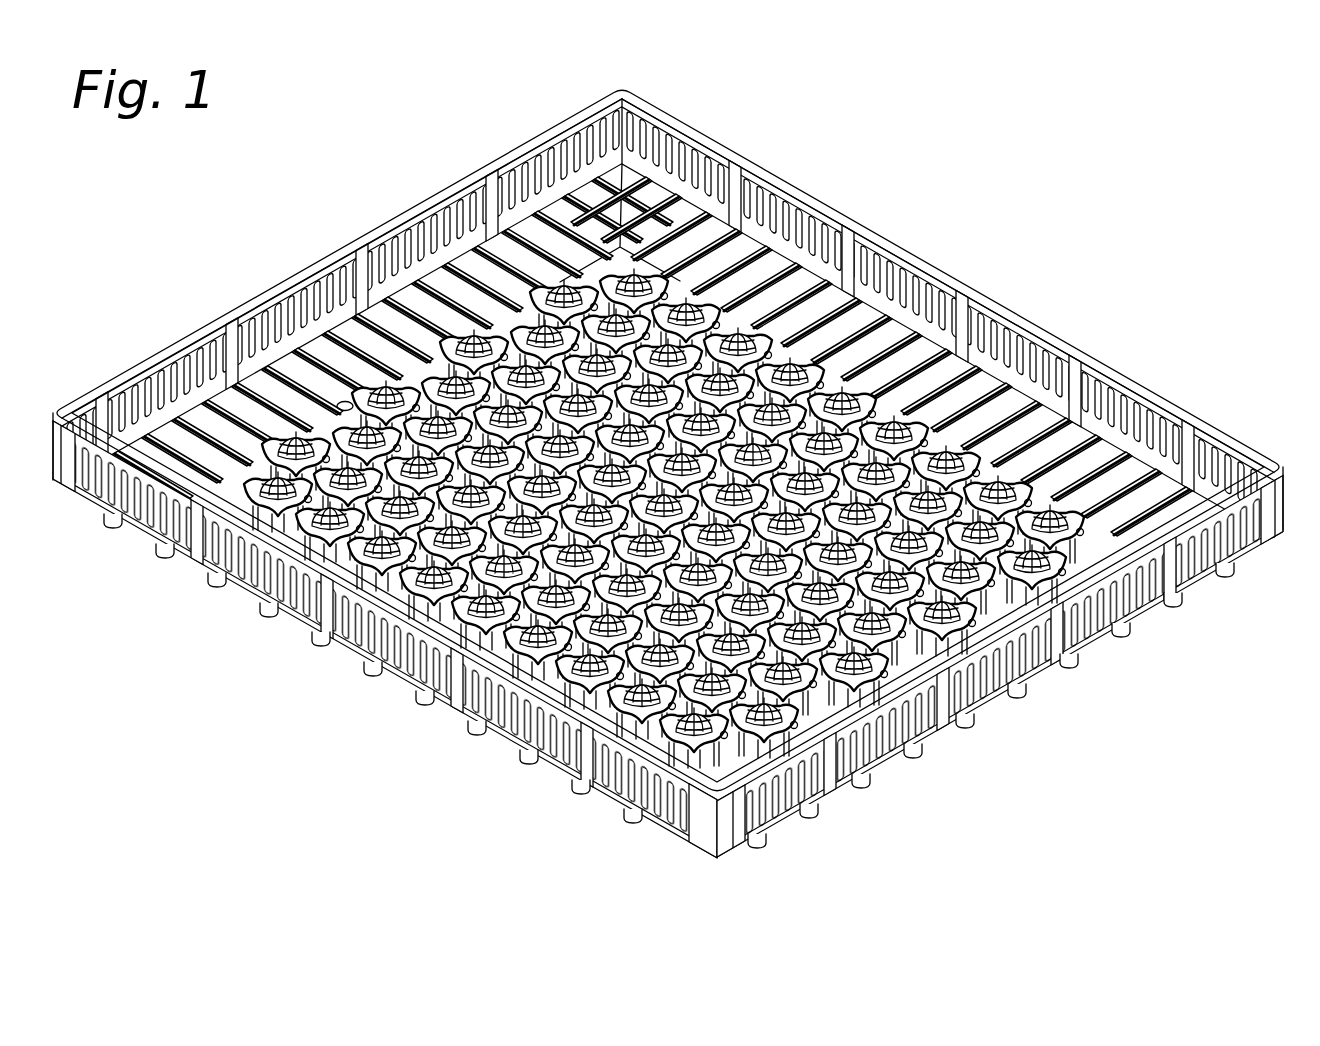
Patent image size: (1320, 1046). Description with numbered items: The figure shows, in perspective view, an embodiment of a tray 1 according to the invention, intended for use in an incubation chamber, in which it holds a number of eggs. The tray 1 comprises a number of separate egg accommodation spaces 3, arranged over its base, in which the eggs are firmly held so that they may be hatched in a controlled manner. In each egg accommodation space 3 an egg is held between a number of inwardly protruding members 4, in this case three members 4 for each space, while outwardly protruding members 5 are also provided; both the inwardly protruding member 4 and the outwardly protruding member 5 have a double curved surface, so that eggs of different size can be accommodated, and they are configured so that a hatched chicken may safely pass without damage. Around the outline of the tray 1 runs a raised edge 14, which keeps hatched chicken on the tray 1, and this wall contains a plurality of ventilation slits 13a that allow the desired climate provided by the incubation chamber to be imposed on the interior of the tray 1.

The tray 1 is at (937, 198).
The egg accommodation space 3 is at (418, 250).
The inwardly protruding member 4 is at (1010, 628).
The outwardly protruding member 5 is at (676, 533).
The ventilation slit 13a is at (975, 302).
The raised edge 14 is at (1177, 412).